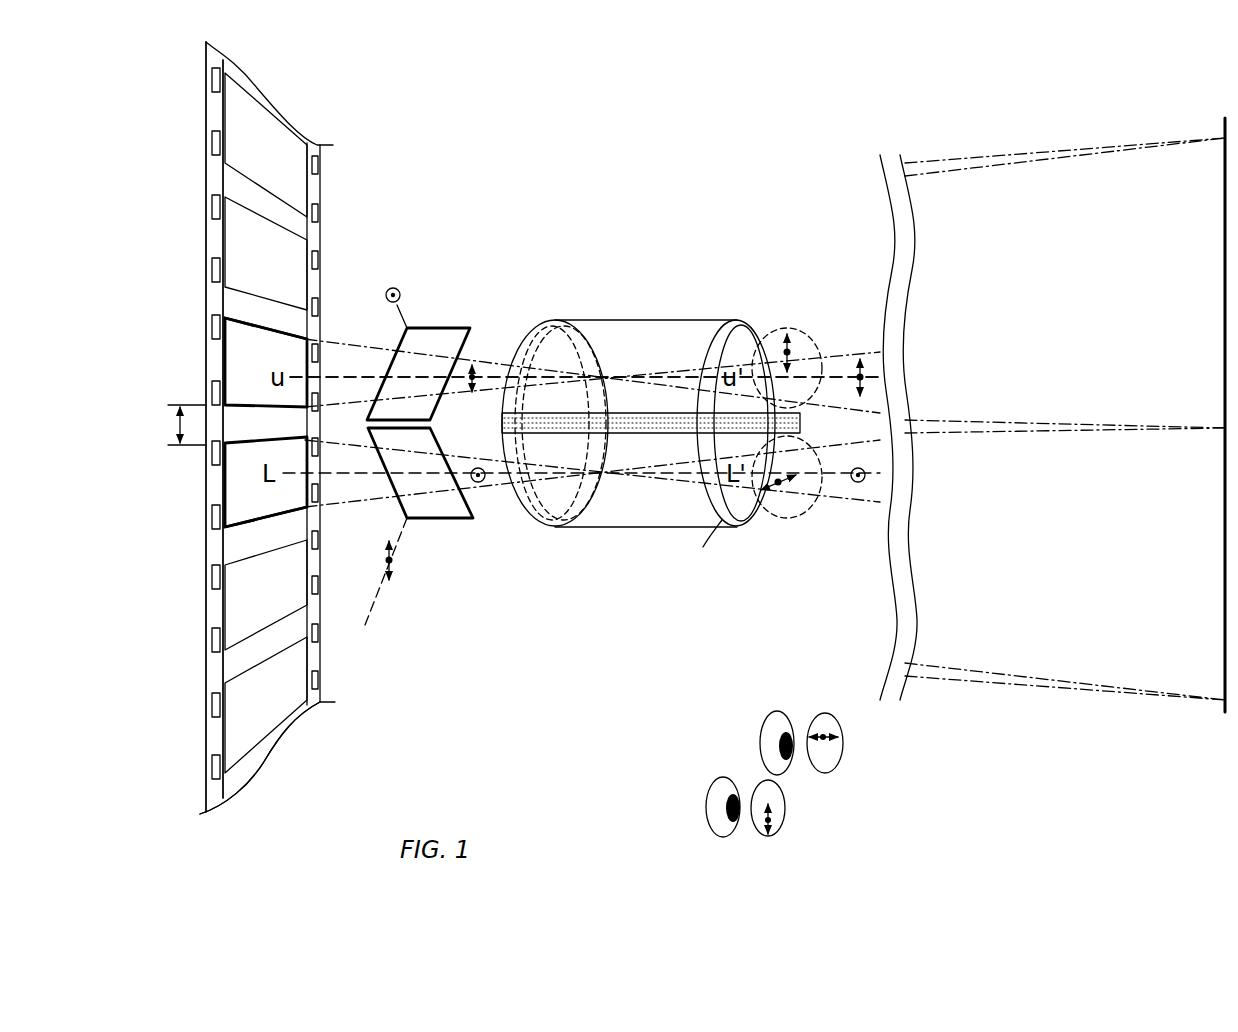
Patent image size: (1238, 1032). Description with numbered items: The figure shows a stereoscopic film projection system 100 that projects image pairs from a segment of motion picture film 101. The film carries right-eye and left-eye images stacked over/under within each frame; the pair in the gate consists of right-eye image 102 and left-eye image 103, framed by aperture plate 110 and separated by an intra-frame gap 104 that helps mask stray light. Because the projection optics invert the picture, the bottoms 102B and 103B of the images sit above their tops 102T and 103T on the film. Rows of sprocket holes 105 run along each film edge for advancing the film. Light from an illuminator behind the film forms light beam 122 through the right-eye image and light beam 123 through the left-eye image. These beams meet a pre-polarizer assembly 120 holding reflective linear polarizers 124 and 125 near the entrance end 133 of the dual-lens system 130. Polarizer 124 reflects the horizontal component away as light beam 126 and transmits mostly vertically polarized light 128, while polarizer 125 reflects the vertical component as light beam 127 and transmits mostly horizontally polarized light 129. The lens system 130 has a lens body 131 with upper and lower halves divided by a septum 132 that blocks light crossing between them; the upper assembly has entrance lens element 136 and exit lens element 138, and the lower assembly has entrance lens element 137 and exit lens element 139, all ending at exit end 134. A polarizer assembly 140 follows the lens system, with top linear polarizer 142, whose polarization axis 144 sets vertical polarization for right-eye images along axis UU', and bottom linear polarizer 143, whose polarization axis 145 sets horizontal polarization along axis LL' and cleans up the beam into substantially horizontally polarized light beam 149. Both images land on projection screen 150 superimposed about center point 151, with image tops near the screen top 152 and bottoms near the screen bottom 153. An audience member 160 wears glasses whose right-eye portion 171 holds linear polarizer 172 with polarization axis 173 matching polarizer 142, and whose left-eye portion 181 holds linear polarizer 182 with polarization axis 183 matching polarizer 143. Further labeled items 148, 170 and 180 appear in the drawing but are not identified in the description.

The 3D film projection system 100 is at (562, 676).
The motion picture film 101 is at (203, 557).
The right-eye image 102 is at (222, 362).
The bottom of right-eye image 102B is at (222, 321).
The top of right-eye image 102T is at (222, 404).
The left-eye image 103 is at (222, 492).
The bottom of left-eye image 103B is at (222, 445).
The top of left-eye image 103T is at (222, 528).
The gap 104 is at (170, 428).
The sprocket holes 105 is at (205, 255).
The aperture plate 110 is at (222, 305).
The polarizer assembly 120 is at (376, 703).
The light beam 122 is at (347, 377).
The light beam 123 is at (350, 473).
The linear polarizer 124 is at (433, 328).
The linear polarizer 125 is at (437, 519).
The light beam 126 is at (395, 288).
The light beam 127 is at (378, 586).
The vertically polarized light 128 is at (468, 360).
The horizontally polarized light 129 is at (480, 485).
The dual-lens system 130 is at (642, 370).
The lens body 131 is at (622, 320).
The septum 132 is at (637, 412).
The entrance end 133 is at (527, 338).
The exit end 134 is at (703, 340).
The entrance lens element 136 is at (557, 320).
The entrance lens element 137 is at (548, 527).
The exit lens element 138 is at (747, 320).
The exit lens element 139 is at (703, 547).
The polarizer assembly 140 is at (804, 377).
The top linear polarizer 142 is at (786, 328).
The bottom linear polarizer 143 is at (777, 518).
The polarization axis 144 is at (795, 343).
The polarization axis 145 is at (782, 495).
The vertical adjustment arrow 148 is at (840, 378).
The light beam 149 is at (858, 483).
The projection screen 150 is at (1222, 276).
The center point 151 is at (1222, 427).
The top of screen 152 is at (1222, 137).
The bottom of screen 153 is at (1222, 698).
The audience member 160 is at (777, 771).
The right eye 170 is at (720, 838).
The right-eye portion 171 is at (854, 834).
The linear polarizer 172 is at (773, 838).
The polarization axis 173 is at (774, 818).
The left eye 180 is at (782, 712).
The left-eye portion 181 is at (896, 719).
The linear polarizer 182 is at (827, 715).
The polarization axis 183 is at (828, 740).